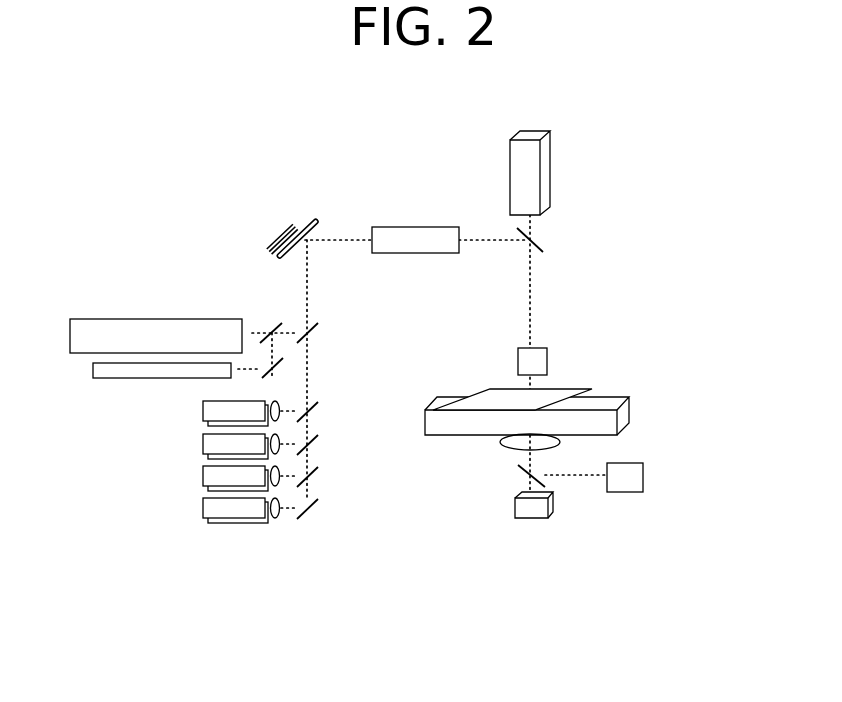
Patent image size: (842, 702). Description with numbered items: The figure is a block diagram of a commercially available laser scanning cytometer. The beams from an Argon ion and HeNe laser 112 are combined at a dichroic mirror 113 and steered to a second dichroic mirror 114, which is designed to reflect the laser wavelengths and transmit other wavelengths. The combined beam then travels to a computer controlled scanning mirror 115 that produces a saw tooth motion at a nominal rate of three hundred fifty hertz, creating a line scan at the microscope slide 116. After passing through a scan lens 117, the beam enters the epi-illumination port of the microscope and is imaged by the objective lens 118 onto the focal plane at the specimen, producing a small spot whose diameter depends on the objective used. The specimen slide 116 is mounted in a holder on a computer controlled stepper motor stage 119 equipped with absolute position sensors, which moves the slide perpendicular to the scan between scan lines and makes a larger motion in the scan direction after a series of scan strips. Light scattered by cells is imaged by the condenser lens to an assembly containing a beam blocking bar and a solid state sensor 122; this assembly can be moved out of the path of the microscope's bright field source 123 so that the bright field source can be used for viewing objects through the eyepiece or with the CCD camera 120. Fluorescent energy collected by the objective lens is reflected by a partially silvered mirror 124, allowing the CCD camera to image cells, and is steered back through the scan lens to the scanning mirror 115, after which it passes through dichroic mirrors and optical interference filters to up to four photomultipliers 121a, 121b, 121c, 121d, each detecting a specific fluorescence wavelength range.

The laser 112 is at (160, 318).
The dichroic mirror 113 is at (281, 326).
The second dichroic mirror 114 is at (316, 324).
The scanning mirror 115 is at (316, 220).
The microscope slide 116 is at (592, 389).
The scan lens 117 is at (423, 254).
The objective lens 118 is at (547, 352).
The stepper motor stage 119 is at (629, 408).
The CCD camera 120 is at (552, 168).
The photomultiplier 121a is at (203, 415).
The photomultiplier 121b is at (203, 447).
The photomultiplier 121c is at (203, 479).
The photomultiplier 121d is at (203, 512).
The solid state sensor 122 is at (643, 475).
The bright field source 123 is at (515, 505).
The partially silvered mirror 124 is at (542, 243).